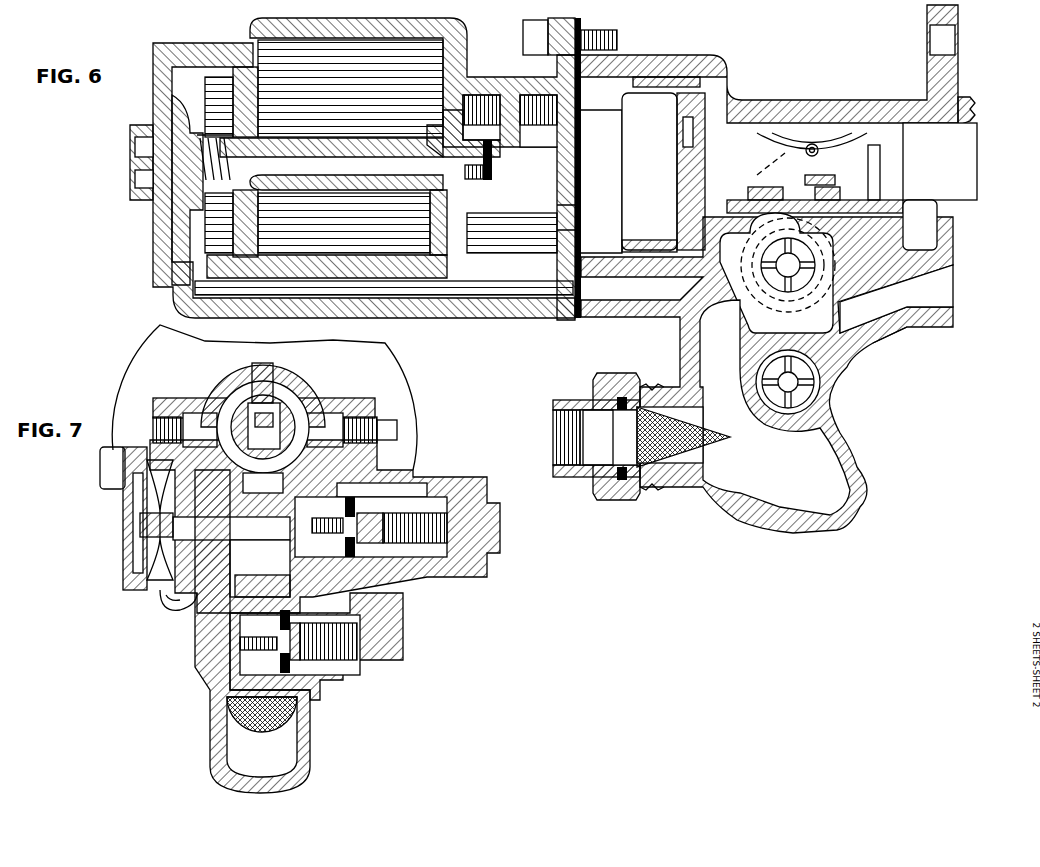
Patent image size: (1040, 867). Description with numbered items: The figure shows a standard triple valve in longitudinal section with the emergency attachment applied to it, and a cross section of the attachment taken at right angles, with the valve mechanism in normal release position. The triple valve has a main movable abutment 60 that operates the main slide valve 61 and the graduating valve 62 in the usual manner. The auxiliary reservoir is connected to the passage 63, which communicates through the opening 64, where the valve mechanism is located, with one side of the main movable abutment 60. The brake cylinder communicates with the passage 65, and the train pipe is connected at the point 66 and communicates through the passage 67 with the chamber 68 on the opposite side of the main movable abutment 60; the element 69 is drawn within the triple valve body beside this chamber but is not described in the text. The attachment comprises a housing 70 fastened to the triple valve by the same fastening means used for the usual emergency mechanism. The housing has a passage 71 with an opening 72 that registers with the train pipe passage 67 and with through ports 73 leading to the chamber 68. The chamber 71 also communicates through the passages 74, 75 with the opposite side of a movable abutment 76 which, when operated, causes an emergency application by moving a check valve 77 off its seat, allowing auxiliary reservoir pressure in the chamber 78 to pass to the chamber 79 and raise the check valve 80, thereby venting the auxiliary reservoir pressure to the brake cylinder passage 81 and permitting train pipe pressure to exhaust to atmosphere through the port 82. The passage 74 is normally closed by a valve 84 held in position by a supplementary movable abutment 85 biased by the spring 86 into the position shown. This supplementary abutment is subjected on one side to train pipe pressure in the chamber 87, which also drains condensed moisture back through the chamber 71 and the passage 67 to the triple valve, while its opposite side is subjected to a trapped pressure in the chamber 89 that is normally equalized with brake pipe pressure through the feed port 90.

In FIG. 6, the main movable abutment 60 is at (687, 58).
In FIG. 6, the main slide valve 61 is at (870, 200).
In FIG. 6, the graduating valve 62 is at (843, 180).
In FIG. 6, the passage 63 is at (967, 164).
In FIG. 6, the opening 64 is at (888, 147).
In FIG. 6, the passage 65 is at (950, 291).
In FIG. 6, the point 66 is at (590, 418).
In FIG. 6, the passage 67 is at (767, 373).
In FIG. 6, the chamber 68 is at (601, 181).
In FIG. 6, the piston cylinder 69 is at (663, 164).
In FIG. 6, the housing 70 is at (462, 44).
In FIG. 6, the passage 71 is at (512, 233).
In FIG. 6, the opening 72 is at (572, 283).
In FIG. 6, the through ports 73 is at (557, 218).
In FIG. 6, the passage 74 is at (480, 143).
In FIG. 6, the passage 75 is at (543, 126).
In FIG. 7, the passage 75 is at (140, 494).
In FIG. 7, the movable abutment 76 is at (157, 529).
In FIG. 7, the check valve 77 is at (355, 510).
In FIG. 7, the chamber 78 is at (372, 492).
In FIG. 7, the chamber 79 is at (231, 557).
In FIG. 7, the check valve 80 is at (303, 693).
In FIG. 7, the brake cylinder passage 81 is at (343, 608).
In FIG. 7, the port 82 is at (176, 612).
In FIG. 6, the valve 84 is at (488, 140).
In FIG. 6, the supplementary movable abutment 85 is at (258, 224).
In FIG. 6, the spring 86 is at (187, 128).
In FIG. 6, the chamber 87 is at (190, 220).
In FIG. 6, the chamber 89 is at (350, 88).
In FIG. 6, the feed port 90 is at (249, 127).